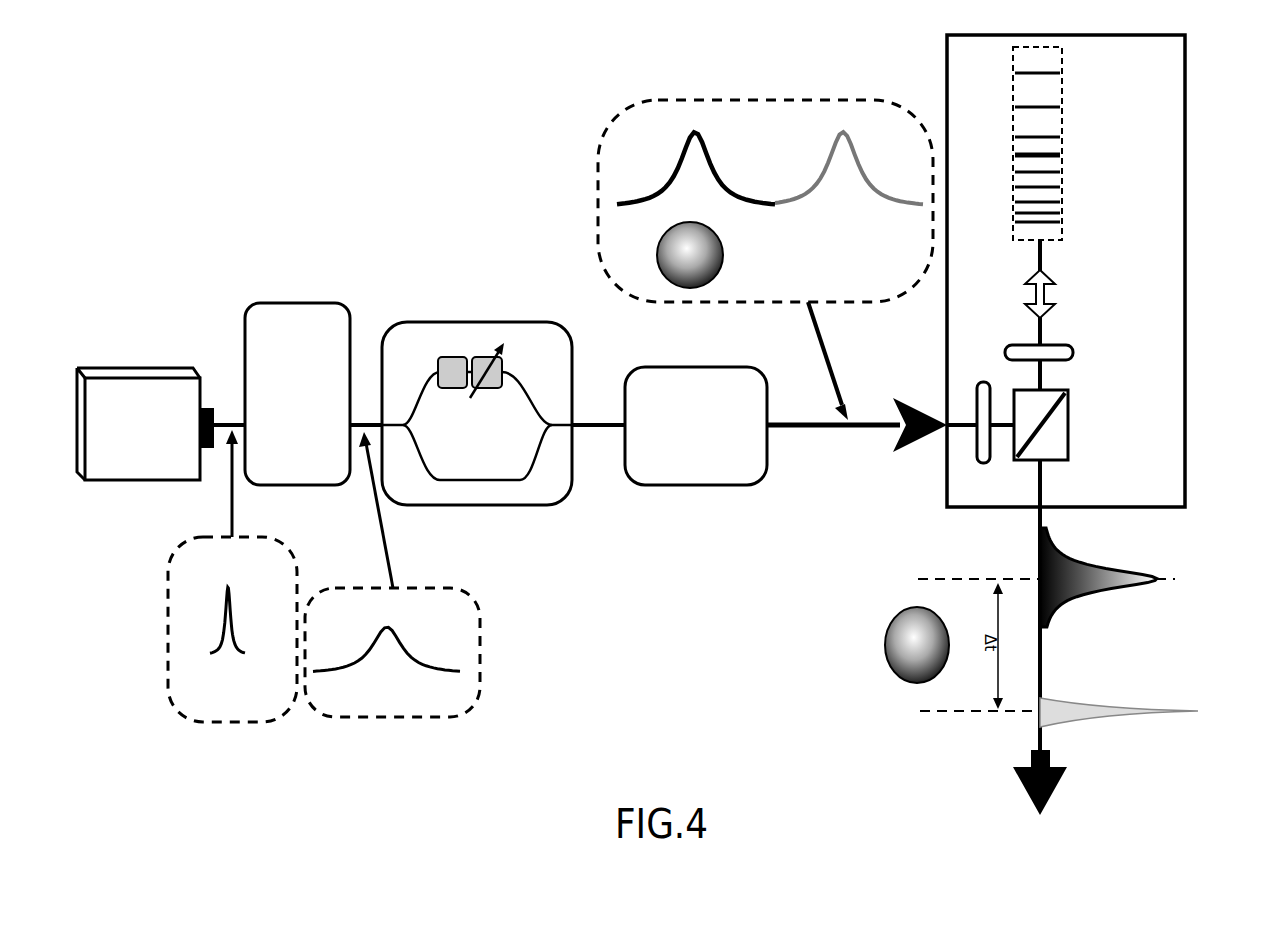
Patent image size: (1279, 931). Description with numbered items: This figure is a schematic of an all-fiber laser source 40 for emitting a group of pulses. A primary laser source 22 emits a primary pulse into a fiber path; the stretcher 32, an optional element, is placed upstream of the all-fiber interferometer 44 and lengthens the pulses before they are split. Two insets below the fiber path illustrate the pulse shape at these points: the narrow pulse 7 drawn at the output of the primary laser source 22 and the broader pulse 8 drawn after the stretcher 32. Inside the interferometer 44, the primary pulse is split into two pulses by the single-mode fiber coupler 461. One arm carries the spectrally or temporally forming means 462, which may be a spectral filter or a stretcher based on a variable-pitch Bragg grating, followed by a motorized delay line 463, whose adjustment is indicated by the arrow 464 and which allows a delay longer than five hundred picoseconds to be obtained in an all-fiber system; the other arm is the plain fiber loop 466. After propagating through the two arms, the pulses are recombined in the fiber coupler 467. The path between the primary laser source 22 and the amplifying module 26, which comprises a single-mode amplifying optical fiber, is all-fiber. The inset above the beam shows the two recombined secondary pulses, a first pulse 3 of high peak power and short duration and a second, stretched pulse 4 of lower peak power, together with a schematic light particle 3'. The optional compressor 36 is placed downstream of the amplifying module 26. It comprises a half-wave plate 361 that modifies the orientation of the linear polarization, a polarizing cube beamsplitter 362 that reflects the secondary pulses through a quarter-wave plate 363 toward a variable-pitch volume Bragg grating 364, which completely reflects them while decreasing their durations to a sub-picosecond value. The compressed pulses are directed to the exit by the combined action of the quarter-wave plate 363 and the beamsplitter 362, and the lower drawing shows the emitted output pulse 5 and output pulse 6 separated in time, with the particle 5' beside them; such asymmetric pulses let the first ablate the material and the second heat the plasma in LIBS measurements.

The optical system 40 is at (266, 152).
The primary laser source 22 is at (145, 424).
The stretcher 32 is at (286, 303).
The all-fiber interferometer 44 is at (462, 321).
The single-mode fiber coupler 461 is at (390, 420).
The spectrally or temporally forming means 462 is at (447, 356).
The motorized delay line 463 is at (503, 360).
The adjustment arrow 464 is at (520, 418).
The lower arm 466 is at (500, 477).
The fiber coupler 467 is at (552, 420).
The amplifying module 26 is at (706, 486).
The compressor 36 is at (1186, 280).
The half-wave plate 361 is at (984, 380).
The polarizing cube beamsplitter 362 is at (1069, 433).
The lens 363 is at (1074, 350).
The variable-pitch volume Bragg grating 364 is at (1062, 152).
The first pulse 3 is at (696, 168).
The second pulse 4 is at (828, 157).
The light particle 3' is at (711, 255).
The narrow pulse 7 is at (233, 610).
The broad pulse 8 is at (400, 633).
The first output pulse 5 is at (1100, 575).
The second output pulse 6 is at (1143, 705).
The output light particle 5' is at (889, 645).